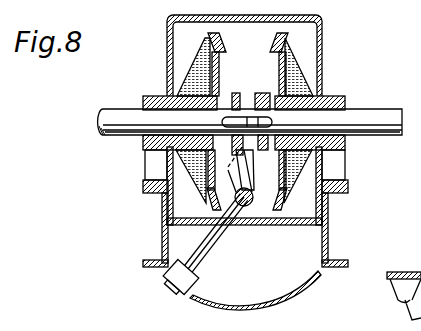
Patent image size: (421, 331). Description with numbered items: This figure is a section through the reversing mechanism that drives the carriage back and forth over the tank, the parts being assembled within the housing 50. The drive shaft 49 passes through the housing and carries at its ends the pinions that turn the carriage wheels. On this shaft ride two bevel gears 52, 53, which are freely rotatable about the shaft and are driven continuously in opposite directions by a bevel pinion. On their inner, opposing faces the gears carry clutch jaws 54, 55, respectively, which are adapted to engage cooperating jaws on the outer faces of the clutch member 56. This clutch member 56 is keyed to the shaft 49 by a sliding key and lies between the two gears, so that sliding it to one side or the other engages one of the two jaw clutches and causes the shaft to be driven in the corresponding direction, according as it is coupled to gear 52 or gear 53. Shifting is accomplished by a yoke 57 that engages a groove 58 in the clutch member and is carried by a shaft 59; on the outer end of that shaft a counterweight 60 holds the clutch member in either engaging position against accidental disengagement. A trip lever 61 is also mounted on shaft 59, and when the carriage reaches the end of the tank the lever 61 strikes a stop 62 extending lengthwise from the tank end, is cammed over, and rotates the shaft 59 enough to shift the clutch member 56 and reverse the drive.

The drive shaft 49 is at (118, 115).
The housing 50 is at (320, 42).
The bevel gear 52 is at (296, 73).
The bevel gear 53 is at (177, 76).
The clutch jaws 54 is at (260, 97).
The clutch jaws 55 is at (219, 110).
The clutch member 56 is at (247, 80).
The yoke 57 is at (205, 178).
The groove 58 is at (254, 150).
The shaft 59 is at (238, 212).
The counterweight 60 is at (303, 163).
The trip lever 61 is at (213, 255).
The stop 62 is at (255, 297).